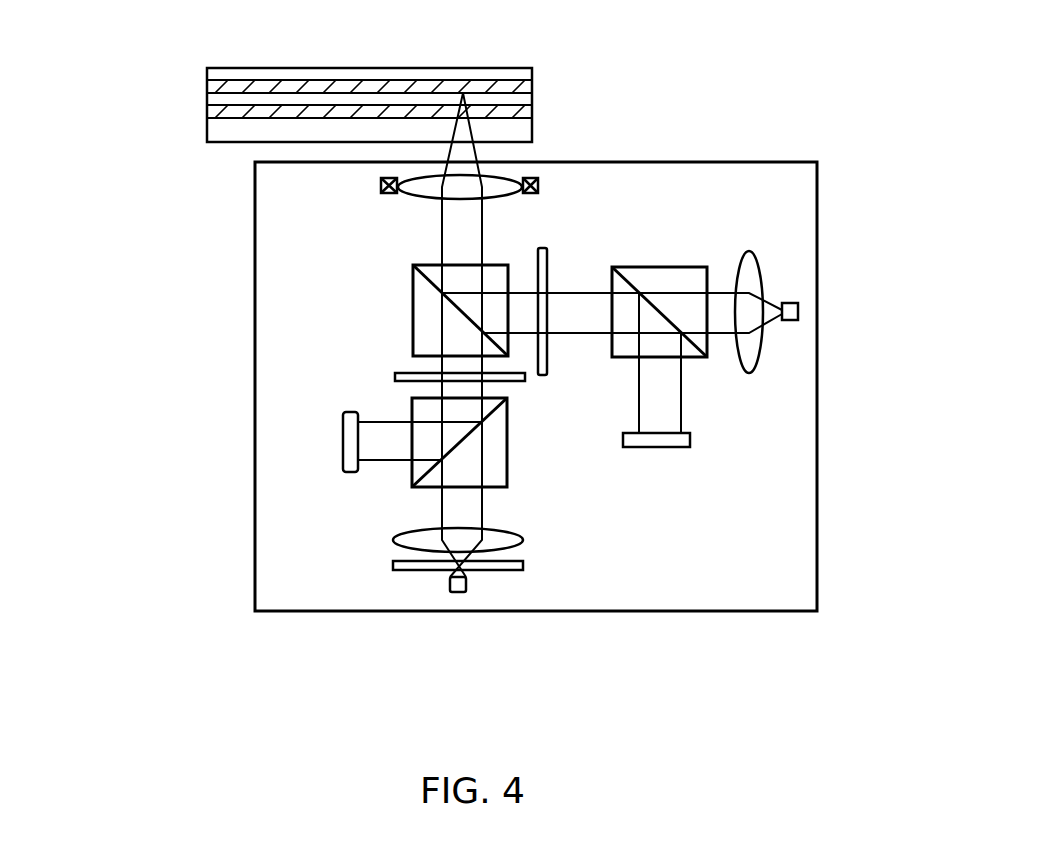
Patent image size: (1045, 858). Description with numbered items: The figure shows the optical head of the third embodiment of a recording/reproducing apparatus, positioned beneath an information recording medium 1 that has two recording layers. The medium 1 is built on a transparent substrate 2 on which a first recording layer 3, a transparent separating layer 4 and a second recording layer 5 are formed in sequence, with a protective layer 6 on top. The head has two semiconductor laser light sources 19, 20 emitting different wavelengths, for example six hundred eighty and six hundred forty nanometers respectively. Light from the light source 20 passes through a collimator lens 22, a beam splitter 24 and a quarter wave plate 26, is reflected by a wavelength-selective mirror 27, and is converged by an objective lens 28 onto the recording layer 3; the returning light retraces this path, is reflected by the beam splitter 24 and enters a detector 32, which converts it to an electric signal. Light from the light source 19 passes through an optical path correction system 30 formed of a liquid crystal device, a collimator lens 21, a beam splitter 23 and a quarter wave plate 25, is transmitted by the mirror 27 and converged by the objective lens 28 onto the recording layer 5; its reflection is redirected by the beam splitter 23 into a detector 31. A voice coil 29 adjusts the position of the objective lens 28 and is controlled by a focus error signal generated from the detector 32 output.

The information recording medium 1 is at (88, 22).
The transparent substrate 2 is at (205, 128).
The first recording layer 3 is at (205, 112).
The transparent separating layer 4 is at (205, 103).
The second recording layer 5 is at (205, 88).
The protective layer 6 is at (205, 73).
The light source 19 is at (460, 592).
The light source 20 is at (798, 311).
The collimator lens 21 is at (523, 540).
The collimator lens 22 is at (760, 262).
The beam splitter 23 is at (410, 408).
The beam splitter 24 is at (693, 267).
The ¼ wave plate 25 is at (407, 373).
The ¼ wave plate 26 is at (548, 258).
The mirror 27 is at (410, 278).
The objective lens 28 is at (503, 180).
The voice coil 29 is at (542, 183).
The optical path correction system 30 is at (405, 570).
The detector 31 is at (343, 425).
The detector 32 is at (683, 447).